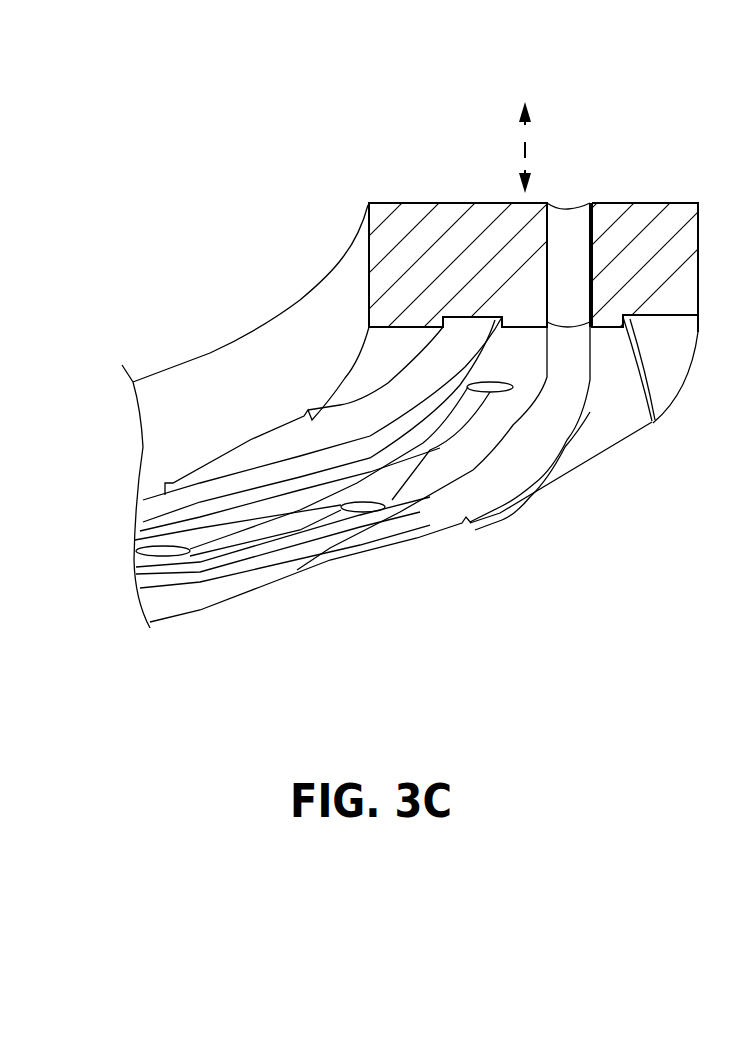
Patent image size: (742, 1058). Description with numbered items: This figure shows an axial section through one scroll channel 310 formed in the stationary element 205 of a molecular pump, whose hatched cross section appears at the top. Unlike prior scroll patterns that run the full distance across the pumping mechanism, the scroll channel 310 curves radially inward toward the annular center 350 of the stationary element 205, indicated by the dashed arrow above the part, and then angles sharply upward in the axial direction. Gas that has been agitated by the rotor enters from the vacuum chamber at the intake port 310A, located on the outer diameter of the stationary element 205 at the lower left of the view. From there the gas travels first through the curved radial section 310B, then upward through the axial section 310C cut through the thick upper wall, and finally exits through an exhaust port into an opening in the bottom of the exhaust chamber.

The stationary element 205 is at (372, 160).
The annular center 350 is at (520, 118).
The scroll channel 310 is at (580, 437).
The intake port 310A is at (420, 548).
The curved radial section 310B is at (512, 480).
The axial section 310C is at (564, 217).